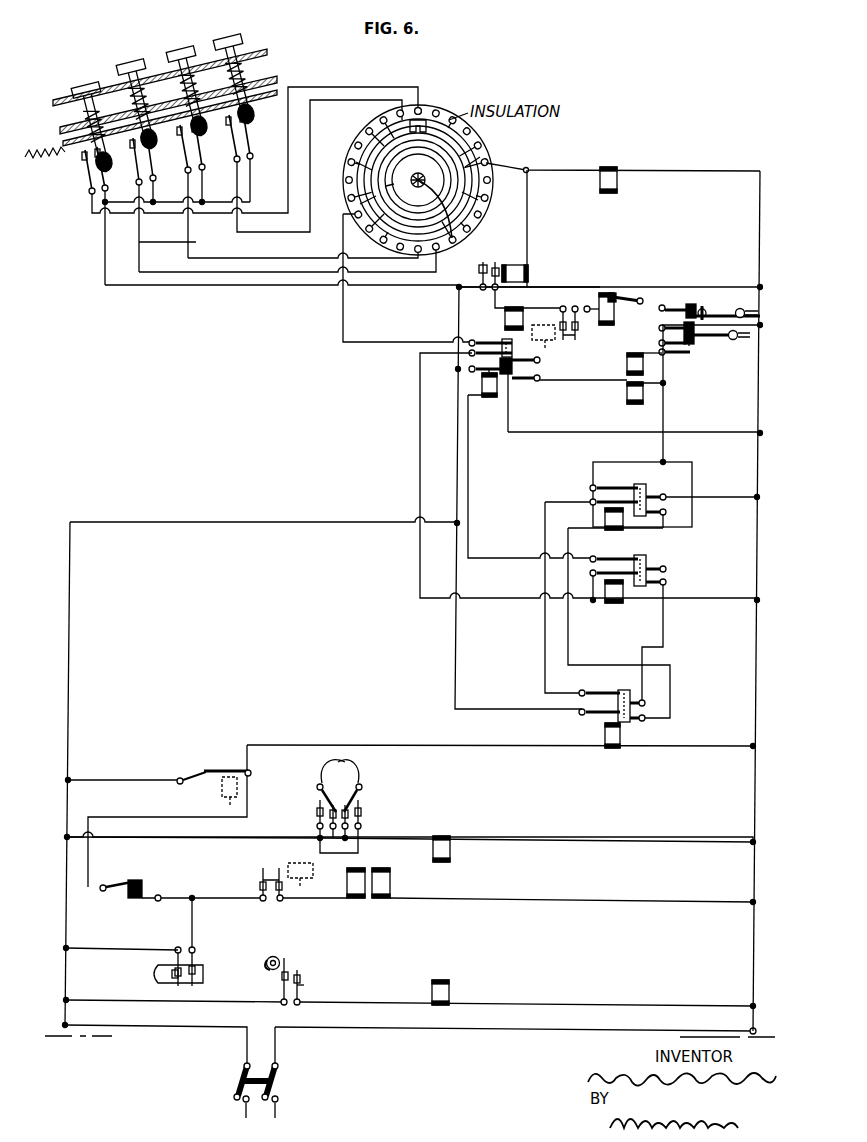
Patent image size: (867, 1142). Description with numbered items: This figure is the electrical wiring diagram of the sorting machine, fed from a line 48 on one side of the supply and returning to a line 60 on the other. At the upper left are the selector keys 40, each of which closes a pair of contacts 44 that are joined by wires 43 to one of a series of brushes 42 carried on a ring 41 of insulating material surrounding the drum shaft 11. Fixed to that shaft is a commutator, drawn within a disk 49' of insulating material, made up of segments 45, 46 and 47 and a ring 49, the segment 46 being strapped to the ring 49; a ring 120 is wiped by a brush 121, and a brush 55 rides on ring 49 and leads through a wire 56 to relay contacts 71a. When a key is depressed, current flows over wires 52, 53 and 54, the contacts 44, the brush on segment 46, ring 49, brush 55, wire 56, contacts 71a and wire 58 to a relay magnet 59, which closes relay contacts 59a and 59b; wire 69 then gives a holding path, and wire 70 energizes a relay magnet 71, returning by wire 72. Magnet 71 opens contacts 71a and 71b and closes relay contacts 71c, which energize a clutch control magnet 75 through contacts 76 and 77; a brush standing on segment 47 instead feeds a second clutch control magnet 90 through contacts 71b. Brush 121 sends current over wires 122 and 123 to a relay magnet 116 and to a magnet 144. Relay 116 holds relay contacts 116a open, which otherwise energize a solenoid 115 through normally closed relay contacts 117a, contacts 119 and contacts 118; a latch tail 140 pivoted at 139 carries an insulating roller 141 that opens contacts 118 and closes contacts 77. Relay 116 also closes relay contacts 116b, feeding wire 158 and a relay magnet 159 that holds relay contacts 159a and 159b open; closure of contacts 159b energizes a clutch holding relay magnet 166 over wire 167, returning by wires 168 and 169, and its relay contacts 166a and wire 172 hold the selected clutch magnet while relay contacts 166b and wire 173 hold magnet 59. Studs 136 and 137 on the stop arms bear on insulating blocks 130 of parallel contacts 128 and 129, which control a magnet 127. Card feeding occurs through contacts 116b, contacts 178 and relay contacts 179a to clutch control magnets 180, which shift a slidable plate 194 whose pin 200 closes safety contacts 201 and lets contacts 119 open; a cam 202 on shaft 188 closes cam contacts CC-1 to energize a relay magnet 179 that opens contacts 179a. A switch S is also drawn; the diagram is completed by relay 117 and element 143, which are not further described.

The selector key 40 is at (86, 104).
The pairs of contacts 44 is at (84, 170).
The wires 43 is at (226, 259).
The wire 54 is at (157, 283).
The wire 56 is at (355, 347).
The ring 41 is at (480, 144).
The brushes 42 is at (385, 127).
The segment 46 is at (370, 156).
The segment 47 is at (470, 156).
The ring 120 is at (472, 206).
The brush 121 is at (478, 192).
The brush 55 is at (396, 186).
The ring 49 is at (412, 171).
The disk 49' is at (400, 90).
The drum shaft 11 is at (456, 238).
The segment 45 is at (430, 118).
The wire 122 is at (523, 172).
The wire 123 is at (529, 210).
The magnet 144 is at (617, 184).
The relay contacts 116a is at (492, 258).
The relay magnet 116 is at (518, 270).
The solenoid 115 is at (512, 309).
The relay contacts 71a is at (502, 341).
The relay contacts 71b is at (525, 374).
The relay contacts 71c is at (512, 380).
The relay magnet 71 is at (488, 397).
The relay 117 is at (546, 352).
The relay contacts 117a is at (572, 342).
The slidable plate 194 is at (598, 326).
The pin 200 is at (616, 318).
The safety contacts 201 is at (168, 980).
The contacts 119 is at (622, 297).
The contacts 77 is at (680, 308).
The contacts 118 is at (680, 310).
The insulating roller 141 is at (703, 308).
The tail 140 is at (724, 313).
The pivot 139 is at (741, 308).
The contacts 76 is at (660, 345).
The arm 143 is at (722, 340).
The second clutch control magnet 90 is at (645, 368).
The clutch control magnet 75 is at (627, 393).
The wire 169 is at (664, 415).
The wire 72 is at (532, 433).
The wire 53 is at (456, 410).
The wire 58 is at (420, 470).
The wire 52 is at (388, 524).
The wire 70 is at (468, 540).
The wire 173 is at (545, 660).
The wire 168 is at (692, 515).
The wire 172 is at (720, 501).
The relay contacts 166a is at (636, 492).
The relay contacts 166b is at (644, 515).
The clutch holding relay magnet 166 is at (610, 520).
The wire 167 is at (568, 647).
The relay contacts 59a is at (666, 569).
The relay contacts 59b is at (666, 583).
The relay magnet 59 is at (614, 596).
The wire 69 is at (656, 665).
The relay contacts 159a is at (613, 695).
The relay contacts 159b is at (602, 717).
The relay magnet 159 is at (617, 748).
The wire 158 is at (520, 748).
The line 48 is at (65, 790).
The relay contacts 116b is at (200, 780).
The blocks 130 is at (340, 771).
The stud 136 is at (317, 790).
The stud 137 is at (363, 790).
The pair of contacts 128 is at (317, 818).
The pair of contacts 129 is at (361, 818).
The magnet 127 is at (452, 855).
The contacts 178 is at (144, 889).
The relay contacts 179a is at (269, 868).
The relay magnet 179 is at (308, 884).
The clutch control magnets 180 is at (372, 872).
The cam 202 is at (270, 956).
The shaft 188 is at (286, 960).
The cam contacts CC-1 is at (301, 986).
The line 60 is at (756, 926).
The switch S is at (256, 1079).